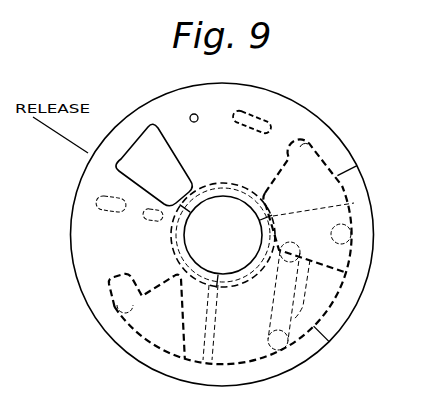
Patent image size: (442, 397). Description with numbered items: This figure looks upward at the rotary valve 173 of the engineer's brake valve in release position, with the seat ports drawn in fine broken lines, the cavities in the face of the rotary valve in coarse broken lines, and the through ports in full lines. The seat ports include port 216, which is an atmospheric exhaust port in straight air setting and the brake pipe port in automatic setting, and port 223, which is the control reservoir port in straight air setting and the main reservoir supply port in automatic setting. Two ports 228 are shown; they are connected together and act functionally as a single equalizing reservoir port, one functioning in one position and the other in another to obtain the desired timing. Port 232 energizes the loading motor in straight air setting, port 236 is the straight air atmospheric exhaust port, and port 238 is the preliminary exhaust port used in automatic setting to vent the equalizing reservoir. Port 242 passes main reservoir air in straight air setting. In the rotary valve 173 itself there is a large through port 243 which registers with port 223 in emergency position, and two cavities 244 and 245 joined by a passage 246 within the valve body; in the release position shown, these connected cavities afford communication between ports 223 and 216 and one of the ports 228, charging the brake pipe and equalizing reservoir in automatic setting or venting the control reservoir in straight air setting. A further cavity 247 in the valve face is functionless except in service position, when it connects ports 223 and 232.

The rotary valve 173 is at (82, 182).
The port 216 is at (113, 309).
The port 223 is at (308, 142).
The port 228 is at (300, 296).
The port 232 is at (342, 225).
The port 236 is at (105, 217).
The port 238 is at (150, 221).
The port 242 is at (194, 114).
The through port 243 is at (143, 126).
The cavity 244 is at (356, 171).
The cavity 245 is at (158, 287).
The passage 246 is at (329, 342).
The cavity 247 is at (264, 112).